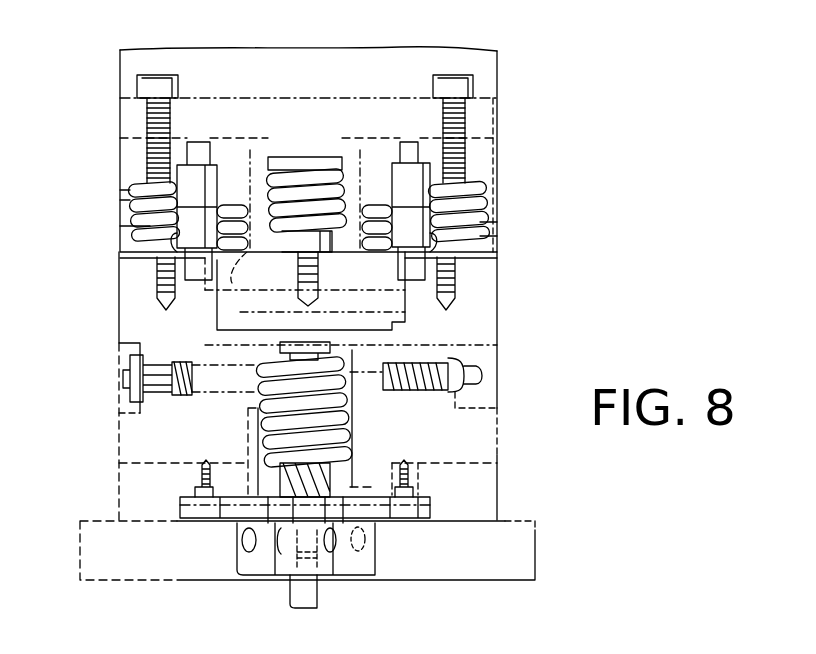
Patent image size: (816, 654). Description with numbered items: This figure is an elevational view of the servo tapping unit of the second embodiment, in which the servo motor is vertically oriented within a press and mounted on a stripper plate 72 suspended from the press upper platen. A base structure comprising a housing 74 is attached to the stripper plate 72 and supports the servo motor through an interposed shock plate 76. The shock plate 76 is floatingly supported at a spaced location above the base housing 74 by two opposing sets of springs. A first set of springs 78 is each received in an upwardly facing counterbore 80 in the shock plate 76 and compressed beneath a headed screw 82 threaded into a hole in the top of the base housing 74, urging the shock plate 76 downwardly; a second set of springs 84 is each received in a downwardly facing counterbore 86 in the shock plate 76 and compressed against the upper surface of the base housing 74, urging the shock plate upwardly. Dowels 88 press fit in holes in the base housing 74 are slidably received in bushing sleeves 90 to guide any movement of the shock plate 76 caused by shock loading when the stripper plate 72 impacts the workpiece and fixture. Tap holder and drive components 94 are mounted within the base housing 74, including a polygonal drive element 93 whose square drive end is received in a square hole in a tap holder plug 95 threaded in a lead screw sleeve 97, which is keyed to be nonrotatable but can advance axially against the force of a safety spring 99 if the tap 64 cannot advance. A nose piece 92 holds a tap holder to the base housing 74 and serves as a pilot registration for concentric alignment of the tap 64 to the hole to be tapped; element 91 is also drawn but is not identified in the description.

The tap 64 is at (313, 597).
The stripper plate 72 is at (505, 527).
The housing 74 is at (122, 435).
The shock plate 76 is at (122, 207).
The first set of springs 78 is at (134, 185).
The upwardly facing counterbore 80 is at (100, 228).
The headed screw 82 is at (482, 146).
The second set of springs 84 is at (238, 192).
The downwardly facing counterbore 86 is at (223, 210).
The dowels 88 is at (197, 142).
The bushing sleeves 90 is at (220, 327).
The plate portion 91 is at (232, 283).
The nose piece 92 is at (242, 560).
The polygonal drive element 93 is at (260, 432).
The tap holder and drive components 94 is at (414, 328).
The tap holder plug 95 is at (350, 458).
The lead screw sleeve 97 is at (263, 480).
The safety spring 99 is at (350, 356).